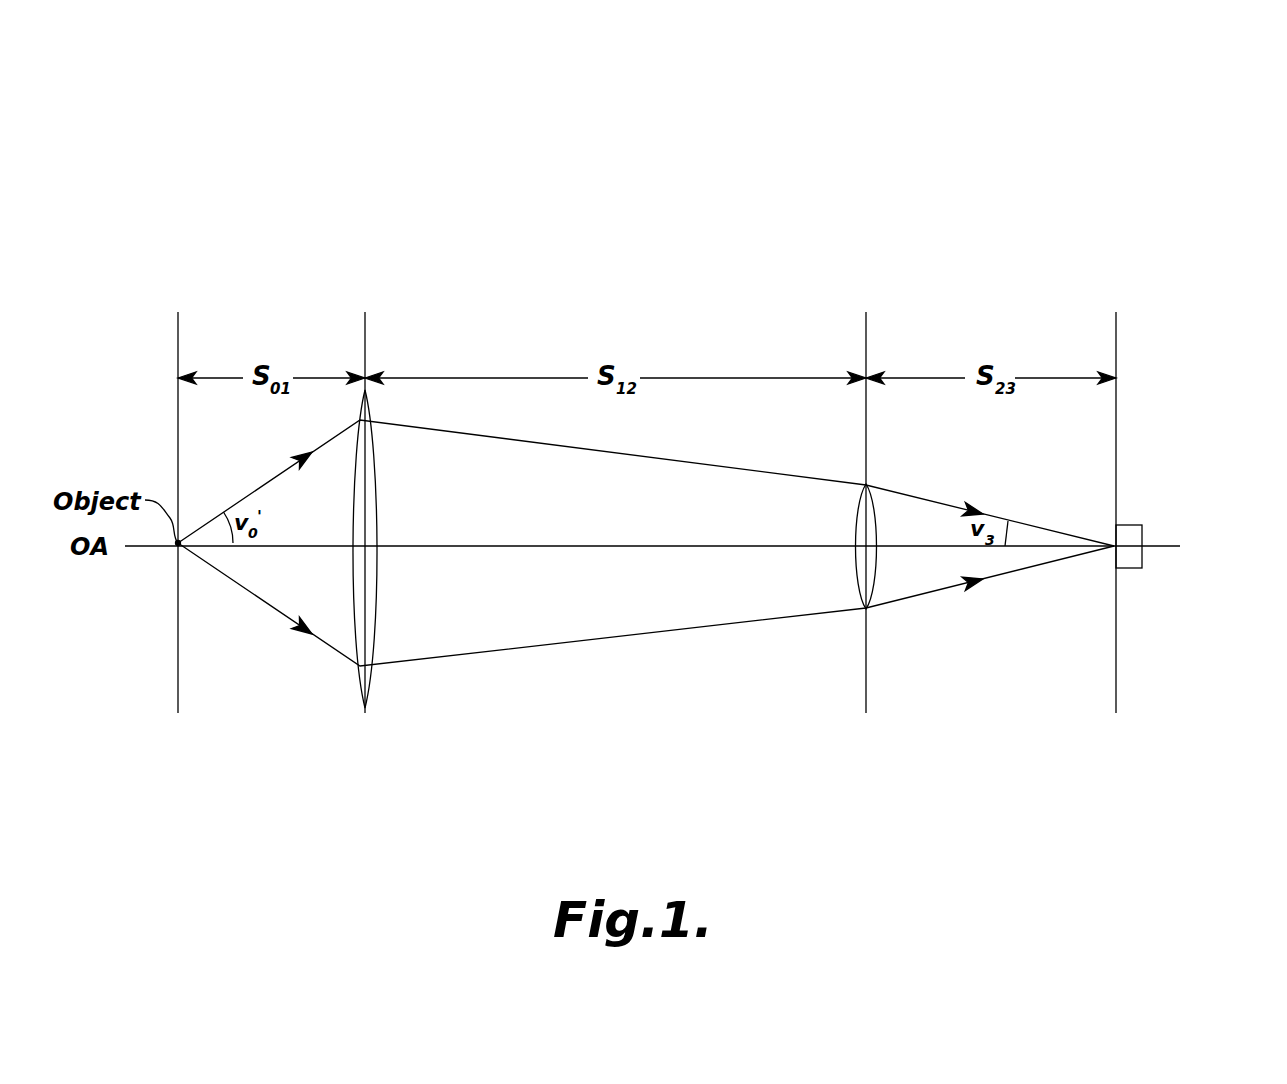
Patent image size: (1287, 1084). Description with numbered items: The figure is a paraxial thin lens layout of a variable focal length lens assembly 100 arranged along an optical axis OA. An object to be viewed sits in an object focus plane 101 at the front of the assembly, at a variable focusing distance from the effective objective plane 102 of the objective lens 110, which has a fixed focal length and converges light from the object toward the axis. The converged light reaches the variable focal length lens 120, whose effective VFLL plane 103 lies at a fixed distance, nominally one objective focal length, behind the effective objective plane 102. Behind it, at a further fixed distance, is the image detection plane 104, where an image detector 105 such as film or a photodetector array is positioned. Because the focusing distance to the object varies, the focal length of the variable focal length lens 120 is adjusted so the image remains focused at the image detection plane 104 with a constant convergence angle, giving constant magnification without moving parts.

The variable focal length lens assembly 100 is at (340, 183).
The object focus plane 101 is at (177, 352).
The effective objective plane 102 is at (365, 352).
The effective VFLL plane 103 is at (865, 356).
The image detection plane 104 is at (1115, 368).
The image detector 105 is at (1142, 546).
The objective lens 110 is at (375, 565).
The variable focal length lens 120 is at (858, 568).